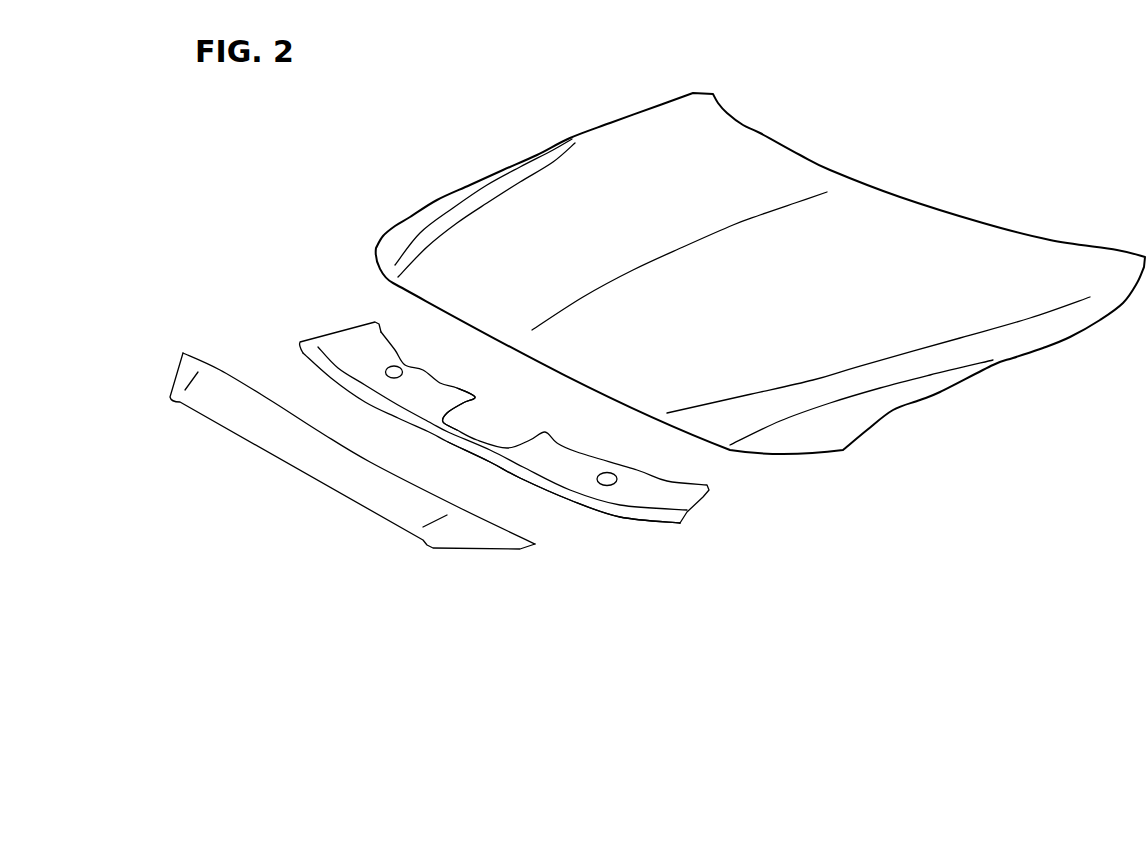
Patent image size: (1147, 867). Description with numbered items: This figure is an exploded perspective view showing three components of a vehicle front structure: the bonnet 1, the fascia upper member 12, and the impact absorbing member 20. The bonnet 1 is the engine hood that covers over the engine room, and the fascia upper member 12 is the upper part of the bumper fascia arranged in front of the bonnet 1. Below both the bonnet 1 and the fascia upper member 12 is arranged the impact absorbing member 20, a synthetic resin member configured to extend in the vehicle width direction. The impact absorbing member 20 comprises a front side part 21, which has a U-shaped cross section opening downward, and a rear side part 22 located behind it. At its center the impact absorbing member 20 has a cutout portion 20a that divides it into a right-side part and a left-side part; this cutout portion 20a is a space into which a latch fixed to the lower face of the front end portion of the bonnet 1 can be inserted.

The bonnet 1 is at (897, 217).
The fascia upper member 12 is at (320, 465).
The impact absorbing member 20 is at (690, 498).
The cutout portion 20a is at (480, 430).
The front side part 21 is at (583, 502).
The rear side part 22 is at (430, 388).